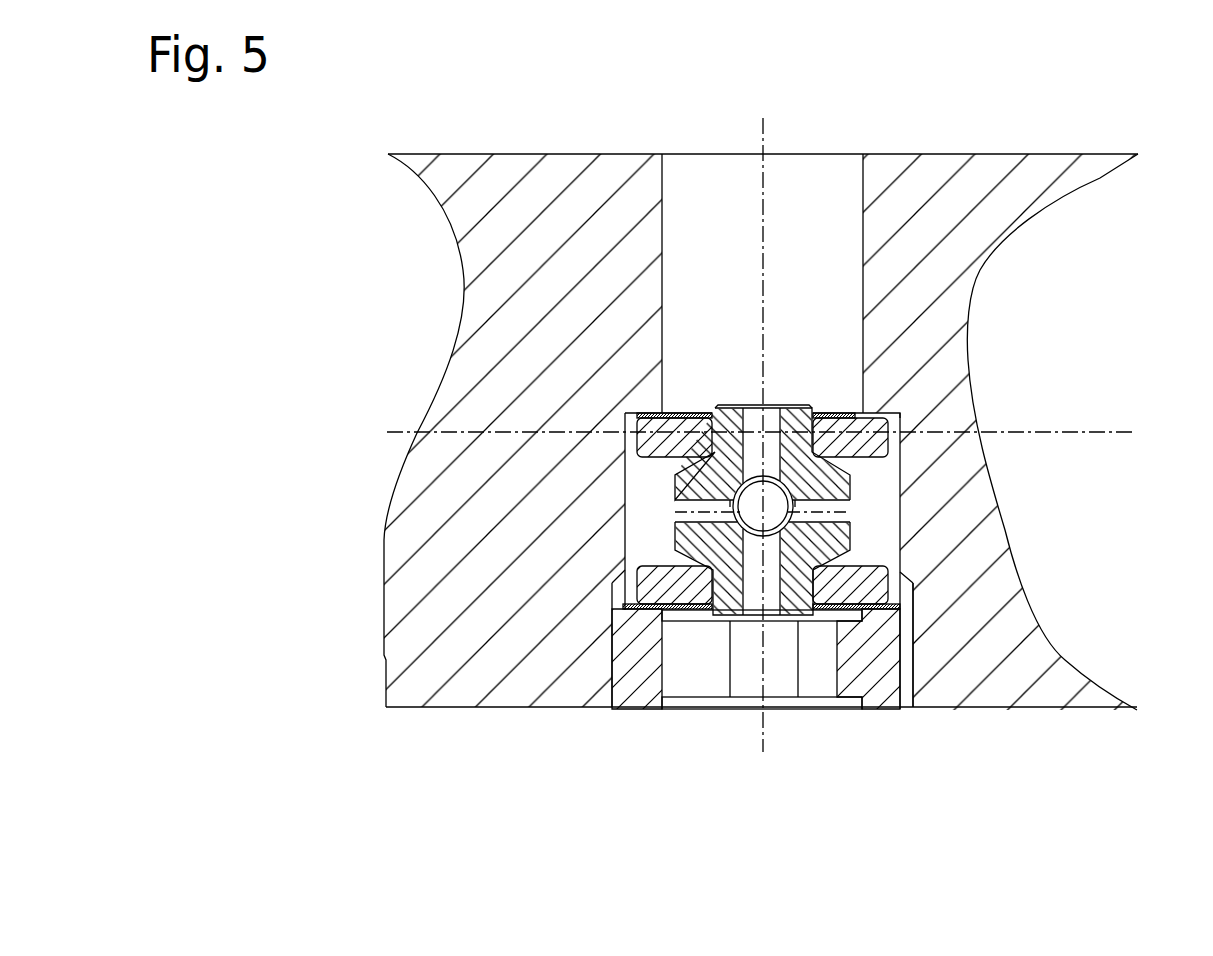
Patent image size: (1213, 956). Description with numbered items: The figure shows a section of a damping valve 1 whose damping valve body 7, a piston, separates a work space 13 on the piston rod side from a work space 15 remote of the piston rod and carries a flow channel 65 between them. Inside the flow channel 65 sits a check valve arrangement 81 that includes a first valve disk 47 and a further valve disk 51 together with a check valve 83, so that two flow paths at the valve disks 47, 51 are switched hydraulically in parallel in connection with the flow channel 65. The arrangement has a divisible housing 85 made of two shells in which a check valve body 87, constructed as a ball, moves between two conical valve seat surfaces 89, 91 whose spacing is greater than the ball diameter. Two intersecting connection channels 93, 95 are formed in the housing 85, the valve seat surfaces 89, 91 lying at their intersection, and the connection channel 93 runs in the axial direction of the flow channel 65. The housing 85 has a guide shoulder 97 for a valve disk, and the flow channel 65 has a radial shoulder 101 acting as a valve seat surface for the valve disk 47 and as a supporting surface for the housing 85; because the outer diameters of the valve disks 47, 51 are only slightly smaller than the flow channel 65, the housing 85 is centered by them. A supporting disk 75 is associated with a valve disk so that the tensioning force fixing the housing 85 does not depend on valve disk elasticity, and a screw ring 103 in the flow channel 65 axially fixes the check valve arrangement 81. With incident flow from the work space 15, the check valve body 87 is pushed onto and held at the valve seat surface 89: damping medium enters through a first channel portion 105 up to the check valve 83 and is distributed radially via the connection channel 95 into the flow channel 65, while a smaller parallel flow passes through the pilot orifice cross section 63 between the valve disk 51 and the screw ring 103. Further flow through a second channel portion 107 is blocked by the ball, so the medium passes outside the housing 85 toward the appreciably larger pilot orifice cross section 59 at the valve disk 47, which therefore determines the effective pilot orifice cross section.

The damping valve 1 is at (335, 732).
The damping valve body 7 is at (1030, 698).
The work space on the piston rod side 13 is at (528, 124).
The work space remote of the piston rod 15 is at (523, 790).
The first valve disk 47 is at (692, 418).
The further valve disk 51 is at (700, 608).
The first pilot orifice cross section 59 is at (877, 413).
The second pilot orifice cross section 63 is at (890, 587).
The third flow channel 65 is at (822, 252).
The supporting disk 75 is at (863, 442).
The check valve arrangement 81 is at (890, 723).
The check valve 83 is at (788, 513).
The housing 85 is at (675, 537).
The check valve body 87 is at (738, 489).
The valve seat surface 89 is at (748, 500).
The valve seat surface 91 is at (740, 530).
The connection channel 93 is at (773, 393).
The connection channel 95 is at (698, 508).
The guide shoulder 97 is at (720, 427).
The radial shoulder 101 is at (633, 413).
The screw ring 103 is at (880, 682).
The first channel portion 105 is at (770, 600).
The second channel portion 107 is at (753, 423).